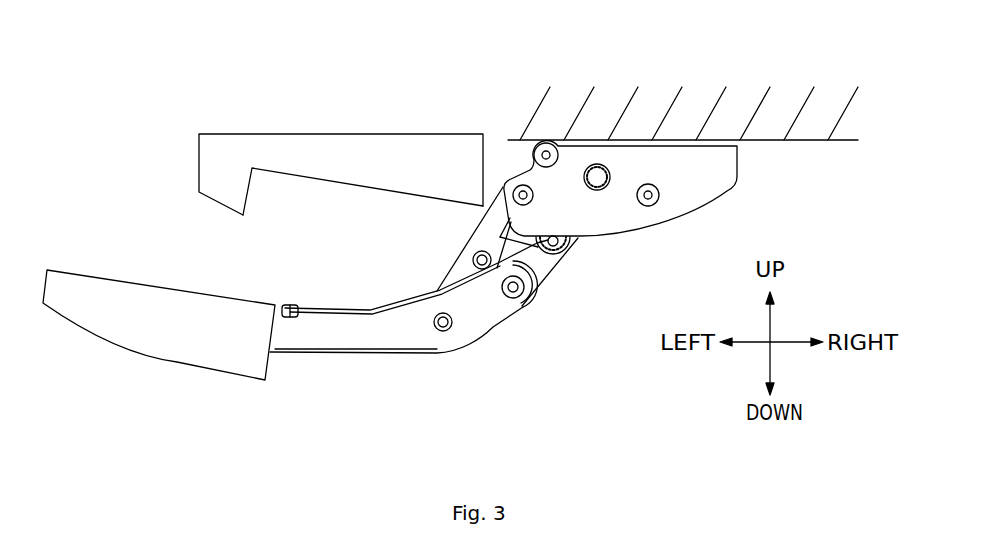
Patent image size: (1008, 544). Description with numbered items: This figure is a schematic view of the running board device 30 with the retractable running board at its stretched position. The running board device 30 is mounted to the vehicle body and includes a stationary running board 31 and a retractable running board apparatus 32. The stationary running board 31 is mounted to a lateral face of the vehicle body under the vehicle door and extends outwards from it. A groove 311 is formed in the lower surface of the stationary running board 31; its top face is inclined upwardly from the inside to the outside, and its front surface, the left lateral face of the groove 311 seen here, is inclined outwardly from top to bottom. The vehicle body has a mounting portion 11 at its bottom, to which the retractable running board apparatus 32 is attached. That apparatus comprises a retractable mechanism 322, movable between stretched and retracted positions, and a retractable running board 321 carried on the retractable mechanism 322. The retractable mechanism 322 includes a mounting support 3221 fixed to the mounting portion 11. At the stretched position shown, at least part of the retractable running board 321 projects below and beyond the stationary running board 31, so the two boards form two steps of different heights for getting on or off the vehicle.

The mounting portion 11 is at (775, 140).
The running board device 30 is at (494, 378).
The stationary running board 31 is at (300, 143).
The groove 311 is at (285, 200).
The retractable running board apparatus 32 is at (295, 356).
The retractable running board 321 is at (195, 342).
The retractable mechanism 322 is at (409, 325).
The mounting support 3221 is at (693, 183).